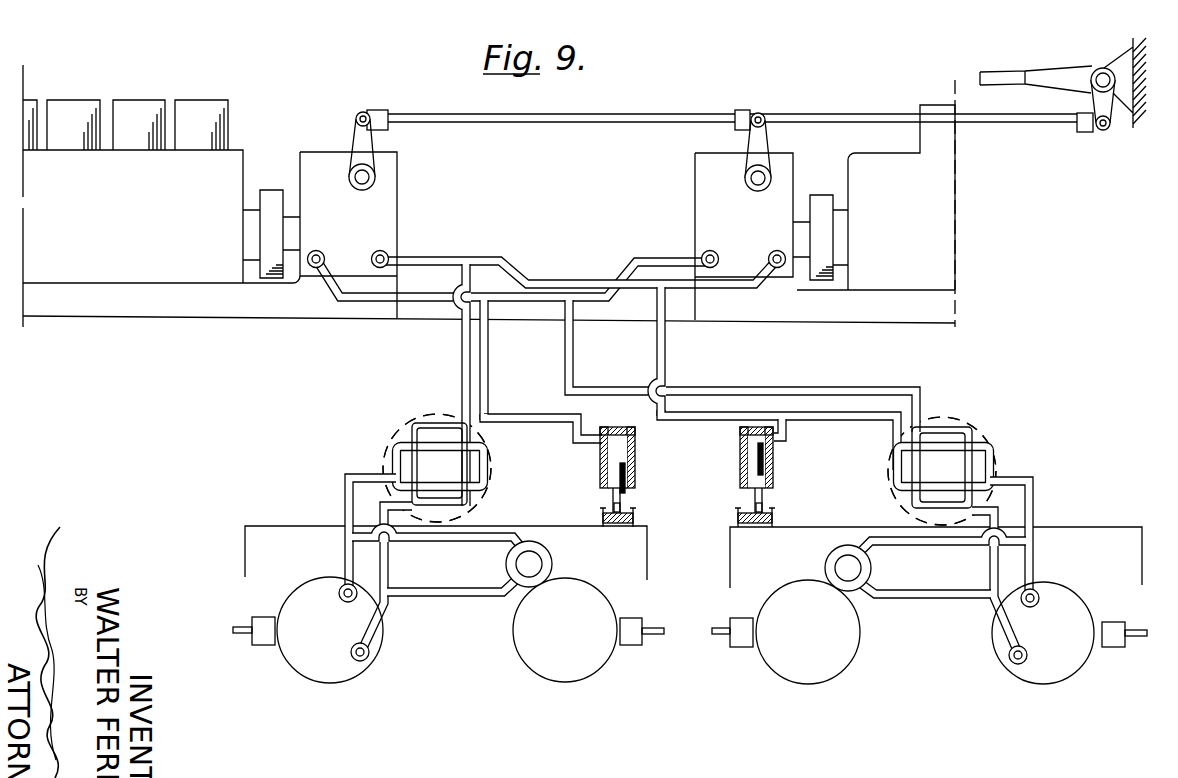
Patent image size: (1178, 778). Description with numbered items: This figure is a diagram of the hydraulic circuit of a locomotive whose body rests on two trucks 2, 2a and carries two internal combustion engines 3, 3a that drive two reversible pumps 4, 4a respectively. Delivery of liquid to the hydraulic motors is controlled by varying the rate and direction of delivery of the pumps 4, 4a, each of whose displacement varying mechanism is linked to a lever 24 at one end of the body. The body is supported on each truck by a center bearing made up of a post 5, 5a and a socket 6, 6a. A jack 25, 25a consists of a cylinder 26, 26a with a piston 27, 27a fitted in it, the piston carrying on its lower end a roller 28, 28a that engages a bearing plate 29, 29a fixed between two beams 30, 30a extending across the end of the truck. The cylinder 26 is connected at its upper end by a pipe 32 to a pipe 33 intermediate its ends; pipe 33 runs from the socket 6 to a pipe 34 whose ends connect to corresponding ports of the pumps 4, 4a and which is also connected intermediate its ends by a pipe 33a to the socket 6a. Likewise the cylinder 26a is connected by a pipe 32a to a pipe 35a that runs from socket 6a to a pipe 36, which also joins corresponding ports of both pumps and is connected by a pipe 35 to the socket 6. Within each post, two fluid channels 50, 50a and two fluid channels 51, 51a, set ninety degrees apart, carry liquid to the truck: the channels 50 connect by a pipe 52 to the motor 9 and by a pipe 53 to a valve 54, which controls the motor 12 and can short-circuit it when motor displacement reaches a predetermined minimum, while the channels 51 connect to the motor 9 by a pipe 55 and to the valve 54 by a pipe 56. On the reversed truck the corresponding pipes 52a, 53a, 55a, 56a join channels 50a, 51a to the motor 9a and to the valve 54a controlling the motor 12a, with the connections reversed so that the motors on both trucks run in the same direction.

The truck 2 is at (245, 533).
The truck 2a is at (1096, 527).
The internal combustion engine 3 is at (161, 216).
The internal combustion engine 3a is at (901, 197).
The reversible pump 4 is at (348, 215).
The reversible pump 4a is at (744, 216).
The post 5 is at (397, 436).
The post 5a is at (982, 427).
The socket 6 is at (415, 468).
The socket 6a is at (963, 468).
The motor 9 is at (308, 630).
The motor 9a is at (1069, 633).
The motor 12 is at (588, 630).
The motor 12a is at (786, 632).
The lever 24 is at (1068, 57).
The jack 25 is at (597, 448).
The jack 25a is at (737, 455).
The cylinder 26 is at (637, 448).
The cylinder 26a is at (772, 460).
The piston 27 is at (626, 465).
The piston 27a is at (753, 450).
The roller 28 is at (622, 508).
The roller 28a is at (753, 508).
The bearing plate 29 is at (624, 523).
The bearing plate 29a is at (762, 523).
The beam 30 is at (601, 516).
The beam 30a is at (772, 513).
The pipe 32 is at (541, 412).
The pipe 32a is at (792, 430).
The pipe 33 is at (488, 346).
The pipe 33a is at (569, 344).
The pipe 34 is at (654, 257).
The pipe 35 is at (461, 346).
The pipe 35a is at (666, 345).
The pipe 36 is at (486, 257).
The fluid channel 50 is at (480, 488).
The fluid channel 50a is at (893, 490).
The fluid channel 51 is at (449, 463).
The fluid channel 51a is at (966, 470).
The pipe 52 is at (347, 548).
The pipe 52a is at (1032, 552).
The pipe 53 is at (460, 544).
The pipe 53a is at (951, 542).
The valve 54 is at (551, 553).
The valve 54a is at (833, 556).
The pipe 55 is at (394, 626).
The pipe 55a is at (1006, 634).
The pipe 56 is at (468, 587).
The pipe 56a is at (961, 596).